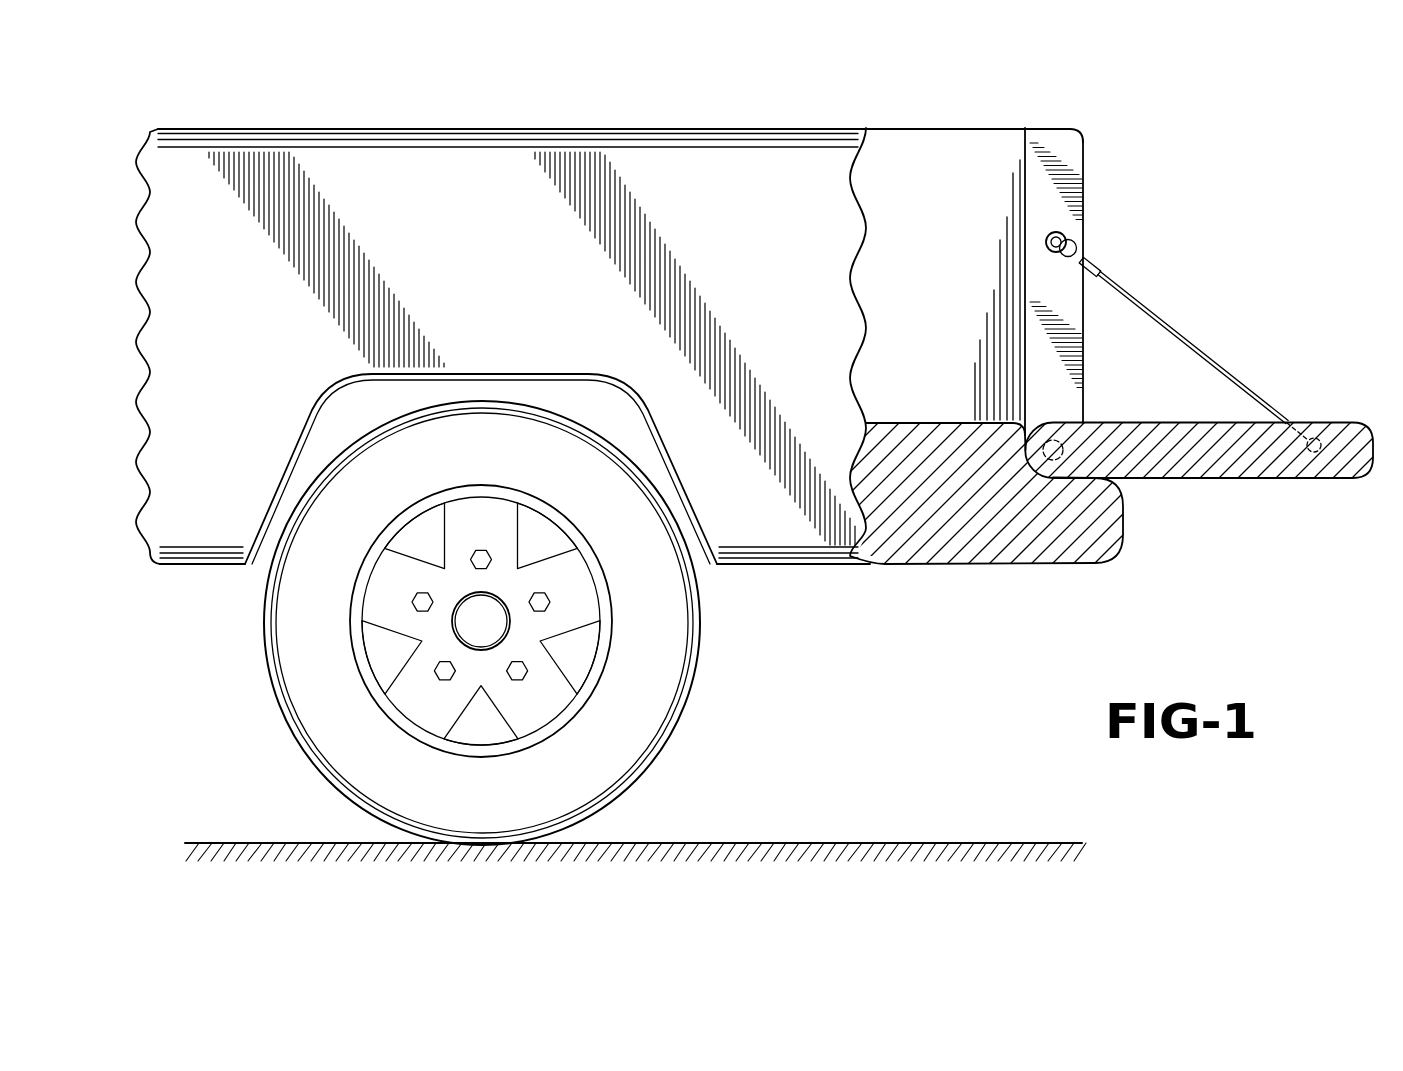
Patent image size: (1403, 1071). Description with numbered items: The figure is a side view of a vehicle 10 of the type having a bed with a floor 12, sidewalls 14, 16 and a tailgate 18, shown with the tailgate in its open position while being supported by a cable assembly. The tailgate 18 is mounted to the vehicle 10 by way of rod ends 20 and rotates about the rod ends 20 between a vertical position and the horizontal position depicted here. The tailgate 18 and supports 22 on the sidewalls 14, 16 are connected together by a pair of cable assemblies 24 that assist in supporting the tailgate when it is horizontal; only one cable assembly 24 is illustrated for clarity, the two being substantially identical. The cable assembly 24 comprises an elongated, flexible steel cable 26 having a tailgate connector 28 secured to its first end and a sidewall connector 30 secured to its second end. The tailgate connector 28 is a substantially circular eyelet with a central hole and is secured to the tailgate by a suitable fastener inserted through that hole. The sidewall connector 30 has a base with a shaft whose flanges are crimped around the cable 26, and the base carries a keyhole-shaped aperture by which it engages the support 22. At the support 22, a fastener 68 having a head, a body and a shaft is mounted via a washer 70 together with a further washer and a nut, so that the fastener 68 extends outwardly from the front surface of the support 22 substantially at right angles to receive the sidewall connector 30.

The vehicle 10 is at (769, 452).
The floor 12 is at (920, 427).
The sidewall 14 is at (1002, 318).
The sidewall 16 is at (421, 168).
The tailgate 18 is at (1187, 522).
The rod ends 20 is at (1062, 462).
The support 22 is at (1073, 153).
The cable assembly 24 is at (1130, 375).
The cable 26 is at (1222, 368).
The tailgate connector 28 is at (1313, 462).
The sidewall connector 30 is at (1055, 242).
The fastener 68 is at (1050, 253).
The washer 70 is at (1048, 240).